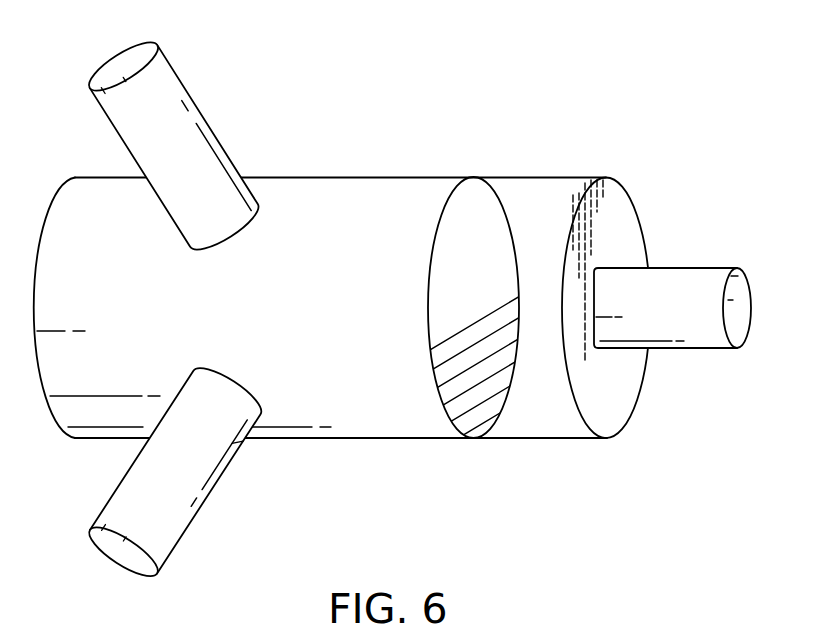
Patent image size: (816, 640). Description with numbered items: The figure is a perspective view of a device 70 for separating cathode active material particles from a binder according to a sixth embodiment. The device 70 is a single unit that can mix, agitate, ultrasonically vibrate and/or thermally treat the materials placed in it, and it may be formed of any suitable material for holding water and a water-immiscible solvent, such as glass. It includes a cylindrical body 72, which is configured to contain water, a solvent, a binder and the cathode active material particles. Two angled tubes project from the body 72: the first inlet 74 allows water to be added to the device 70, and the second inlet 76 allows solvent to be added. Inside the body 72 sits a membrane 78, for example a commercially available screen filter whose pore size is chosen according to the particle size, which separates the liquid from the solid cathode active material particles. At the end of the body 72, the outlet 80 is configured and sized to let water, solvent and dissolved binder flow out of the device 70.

The device 70 is at (534, 96).
The body 72 is at (337, 176).
The first inlet 74 is at (196, 98).
The second inlet 76 is at (210, 490).
The membrane 78 is at (511, 388).
The outlet 80 is at (697, 267).